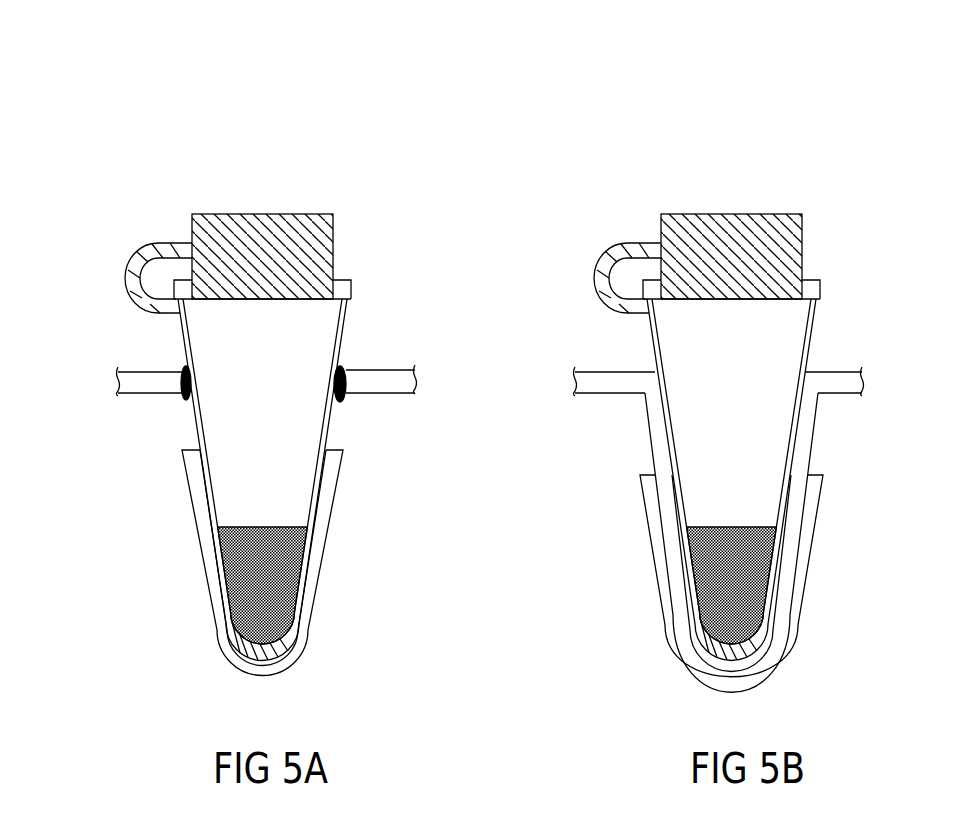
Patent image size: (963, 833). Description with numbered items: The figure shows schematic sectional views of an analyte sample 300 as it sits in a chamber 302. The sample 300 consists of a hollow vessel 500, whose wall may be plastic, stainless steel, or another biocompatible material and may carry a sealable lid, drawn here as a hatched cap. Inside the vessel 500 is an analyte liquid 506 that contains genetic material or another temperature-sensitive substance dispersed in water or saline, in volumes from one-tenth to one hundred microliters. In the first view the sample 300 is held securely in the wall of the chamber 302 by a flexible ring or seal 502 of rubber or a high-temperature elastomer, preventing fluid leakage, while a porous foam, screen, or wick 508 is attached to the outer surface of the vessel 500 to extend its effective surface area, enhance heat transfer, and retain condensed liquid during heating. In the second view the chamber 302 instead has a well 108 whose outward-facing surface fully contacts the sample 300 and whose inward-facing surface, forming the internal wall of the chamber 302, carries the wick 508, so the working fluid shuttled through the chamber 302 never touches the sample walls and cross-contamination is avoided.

In FIG. 5A, the sample 300 is at (172, 136).
In FIG. 5B, the sample 300 is at (650, 136).
In FIG. 5A, the vessel 500 is at (190, 213).
In FIG. 5B, the vessel 500 is at (680, 223).
In FIG. 5A, the seal 502 is at (346, 368).
In FIG. 5A, the chamber 302 is at (152, 382).
In FIG. 5B, the chamber 302 is at (627, 383).
In FIG. 5A, the analyte liquid 506 is at (243, 590).
In FIG. 5B, the analyte liquid 506 is at (713, 590).
In FIG. 5A, the wick 508 is at (316, 610).
In FIG. 5B, the wick 508 is at (662, 607).
In FIG. 5B, the well 108 is at (780, 620).